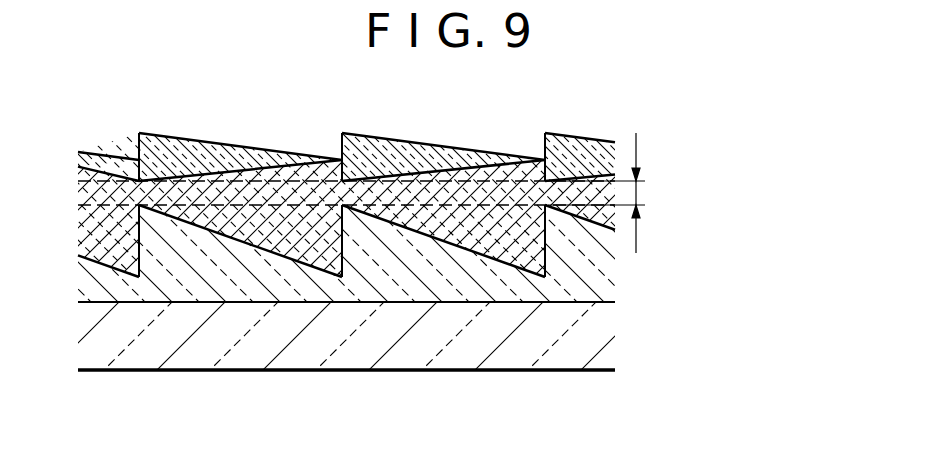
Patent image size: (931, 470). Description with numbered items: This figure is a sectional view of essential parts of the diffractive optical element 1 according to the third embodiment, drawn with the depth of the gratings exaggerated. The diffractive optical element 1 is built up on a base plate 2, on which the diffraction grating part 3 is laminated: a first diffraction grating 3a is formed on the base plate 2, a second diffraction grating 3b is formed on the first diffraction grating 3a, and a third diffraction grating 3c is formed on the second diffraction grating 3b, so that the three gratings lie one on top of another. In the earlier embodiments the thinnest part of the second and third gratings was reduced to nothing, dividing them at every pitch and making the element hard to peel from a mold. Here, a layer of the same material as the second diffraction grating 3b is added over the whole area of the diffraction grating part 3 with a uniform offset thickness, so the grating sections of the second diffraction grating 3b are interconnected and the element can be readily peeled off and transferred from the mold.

The diffractive optical element 1 is at (462, 250).
The base plate 2 is at (592, 332).
The diffraction grating part 3 is at (462, 250).
The first diffraction grating 3a is at (193, 283).
The second diffraction grating 3b is at (299, 250).
The third diffraction grating 3c is at (221, 152).